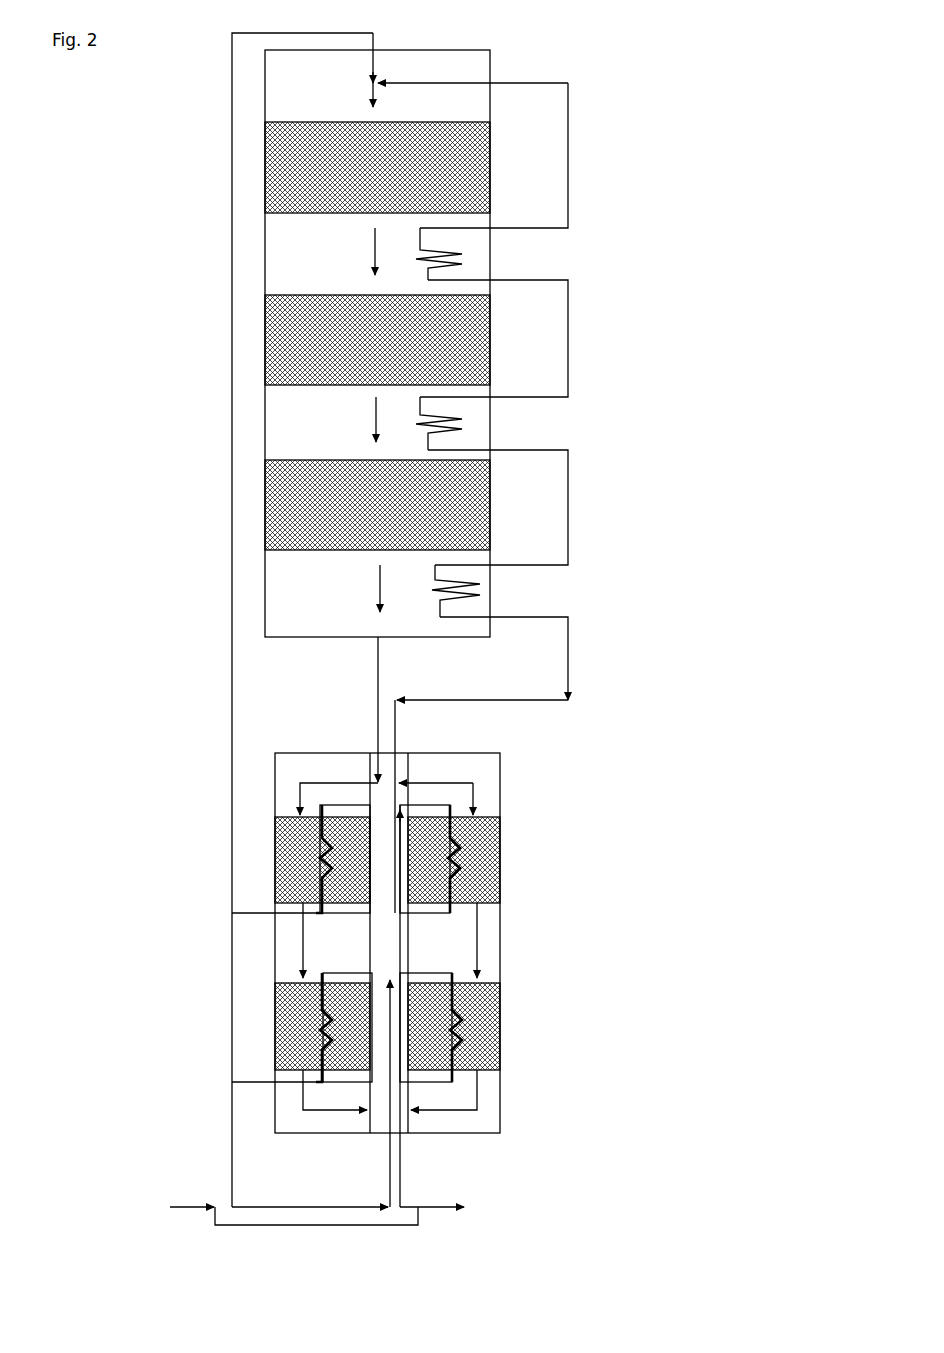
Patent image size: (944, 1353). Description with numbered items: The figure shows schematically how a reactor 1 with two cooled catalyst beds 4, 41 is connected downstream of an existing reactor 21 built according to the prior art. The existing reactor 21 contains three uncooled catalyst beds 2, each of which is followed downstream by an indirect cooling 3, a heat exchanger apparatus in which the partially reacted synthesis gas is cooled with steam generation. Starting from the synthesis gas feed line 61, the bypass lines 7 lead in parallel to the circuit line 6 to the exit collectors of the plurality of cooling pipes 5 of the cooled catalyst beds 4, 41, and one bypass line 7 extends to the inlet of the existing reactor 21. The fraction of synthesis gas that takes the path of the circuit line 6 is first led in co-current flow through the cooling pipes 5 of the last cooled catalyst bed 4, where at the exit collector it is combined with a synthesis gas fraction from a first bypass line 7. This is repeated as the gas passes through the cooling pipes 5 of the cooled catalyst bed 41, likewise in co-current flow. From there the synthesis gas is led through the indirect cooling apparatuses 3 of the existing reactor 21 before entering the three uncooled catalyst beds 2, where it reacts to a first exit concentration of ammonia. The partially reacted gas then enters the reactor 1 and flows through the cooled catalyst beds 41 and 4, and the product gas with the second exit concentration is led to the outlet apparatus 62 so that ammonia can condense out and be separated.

The reactor 1 is at (449, 980).
The uncooled catalyst bed 2 is at (435, 165).
The existing reactor 21 is at (446, 467).
The indirect cooling 3 is at (450, 262).
The last cooled catalyst bed 4 is at (500, 1000).
The cooled catalyst bed 41 is at (500, 832).
The cooling pipes 5 is at (455, 882).
The circuit line 6 is at (318, 1205).
The synthesis gas feed line 61 is at (206, 1207).
The outlet apparatus 62 is at (435, 1203).
The bypass line 7 is at (230, 980).